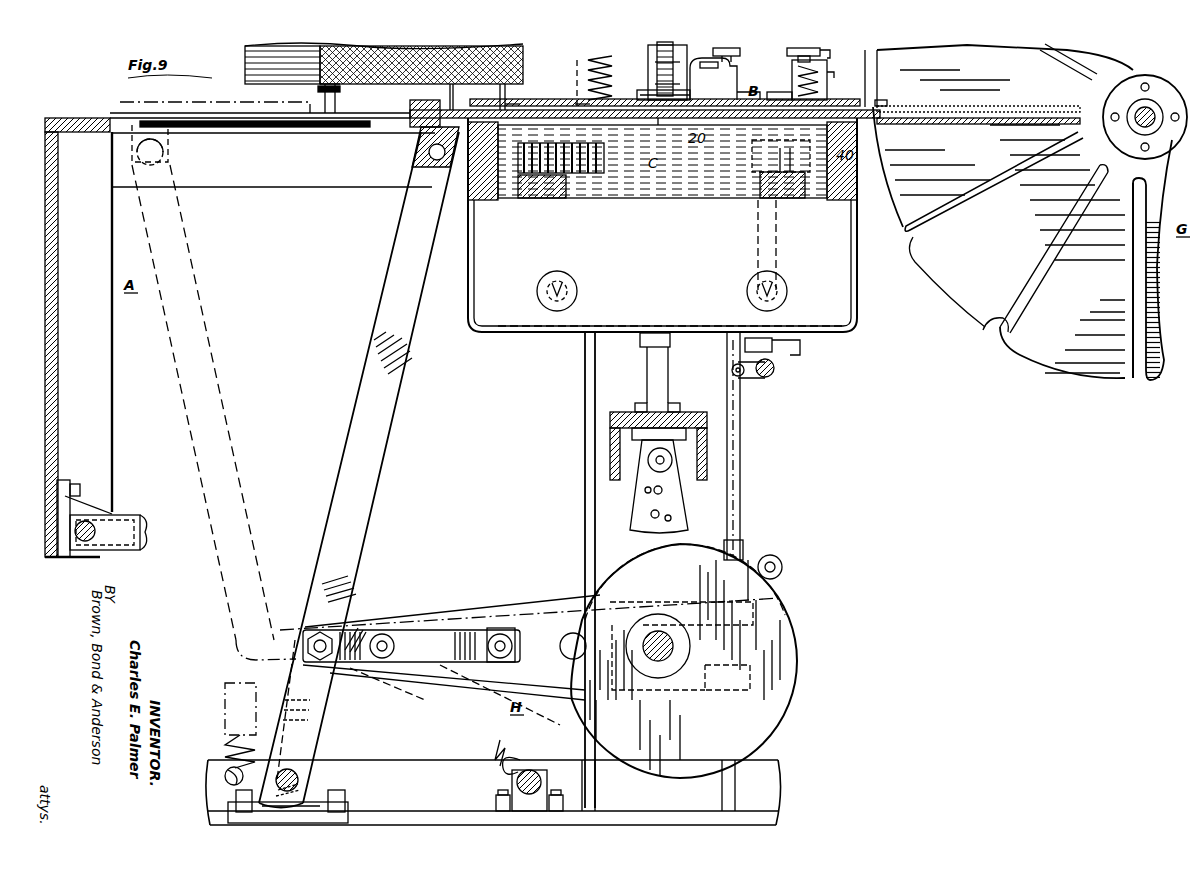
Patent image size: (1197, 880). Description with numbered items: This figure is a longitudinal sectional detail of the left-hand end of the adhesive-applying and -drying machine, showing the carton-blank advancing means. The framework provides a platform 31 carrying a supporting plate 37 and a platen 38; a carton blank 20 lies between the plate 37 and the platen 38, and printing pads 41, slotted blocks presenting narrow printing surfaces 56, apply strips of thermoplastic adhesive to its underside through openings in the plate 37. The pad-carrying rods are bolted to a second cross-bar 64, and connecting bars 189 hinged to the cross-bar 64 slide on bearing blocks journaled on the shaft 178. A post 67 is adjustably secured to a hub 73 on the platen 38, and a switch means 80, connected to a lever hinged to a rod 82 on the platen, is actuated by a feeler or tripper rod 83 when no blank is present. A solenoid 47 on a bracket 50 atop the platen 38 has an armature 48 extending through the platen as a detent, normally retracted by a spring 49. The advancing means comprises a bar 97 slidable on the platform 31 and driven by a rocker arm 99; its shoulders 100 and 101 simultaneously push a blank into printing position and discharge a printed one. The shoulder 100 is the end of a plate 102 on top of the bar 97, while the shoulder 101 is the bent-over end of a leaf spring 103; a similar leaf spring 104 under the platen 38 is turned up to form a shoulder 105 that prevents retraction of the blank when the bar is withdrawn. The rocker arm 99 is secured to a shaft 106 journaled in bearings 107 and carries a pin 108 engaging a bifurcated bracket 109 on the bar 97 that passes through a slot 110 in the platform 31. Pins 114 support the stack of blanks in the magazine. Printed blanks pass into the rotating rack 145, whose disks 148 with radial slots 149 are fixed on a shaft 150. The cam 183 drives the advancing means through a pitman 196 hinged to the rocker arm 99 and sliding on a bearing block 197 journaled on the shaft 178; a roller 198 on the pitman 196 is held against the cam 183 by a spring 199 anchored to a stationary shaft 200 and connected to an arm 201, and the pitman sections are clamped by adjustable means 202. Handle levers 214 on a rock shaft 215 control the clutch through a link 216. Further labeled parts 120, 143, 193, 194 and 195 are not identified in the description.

The carton blank 20 is at (245, 80).
The platform 31 is at (110, 118).
The supporting plate 37 is at (775, 153).
The platen 38 is at (738, 100).
The printing pads 41 is at (580, 186).
The solenoid 47 is at (830, 54).
The armature 48 is at (841, 73).
The spring 49 is at (795, 79).
The bracket 50 is at (787, 52).
The printing surfaces 56 is at (561, 151).
The second cross-bar 64 is at (705, 424).
The post 67 is at (650, 66).
The hub 73 is at (650, 84).
The switch means 80 is at (659, 132).
The rod 82 is at (715, 74).
The feeler or tripper rod 83 is at (658, 56).
The bar 97 is at (486, 178).
The rocker arm 99 is at (380, 292).
The shoulder 100 is at (650, 98).
The shoulder 101 is at (880, 110).
The plate 102 is at (515, 103).
The leaf spring 103 is at (858, 120).
The leaf spring 104 is at (580, 102).
The shoulder 105 is at (594, 73).
The shaft 106 is at (300, 784).
The bearings 107 is at (322, 770).
The pin 108 is at (432, 156).
The bifurcated bracket 109 is at (397, 112).
The slot 110 is at (290, 128).
The pins 114 is at (340, 88).
The clamp 120 is at (128, 546).
The bracket 143 is at (112, 512).
The rotating rack 145 is at (1098, 311).
The disks 148 is at (960, 293).
The slots 149 is at (984, 334).
The shaft 150 is at (1148, 110).
The shaft 178 is at (675, 652).
The cam 183 is at (795, 698).
The connecting bars 189 is at (688, 512).
The spring housing 193 is at (226, 730).
The spring 194 is at (228, 774).
The stop 195 is at (147, 528).
The connecting bar 196 is at (500, 632).
The bearing block 197 is at (783, 582).
The roller 198 is at (577, 632).
The spring 199 is at (350, 640).
The stationary shaft 200 is at (530, 778).
The arm 201 is at (310, 590).
The clamping means 202 is at (386, 640).
The levers 214 is at (770, 345).
The rock shaft 215 is at (775, 372).
The link 216 is at (742, 437).